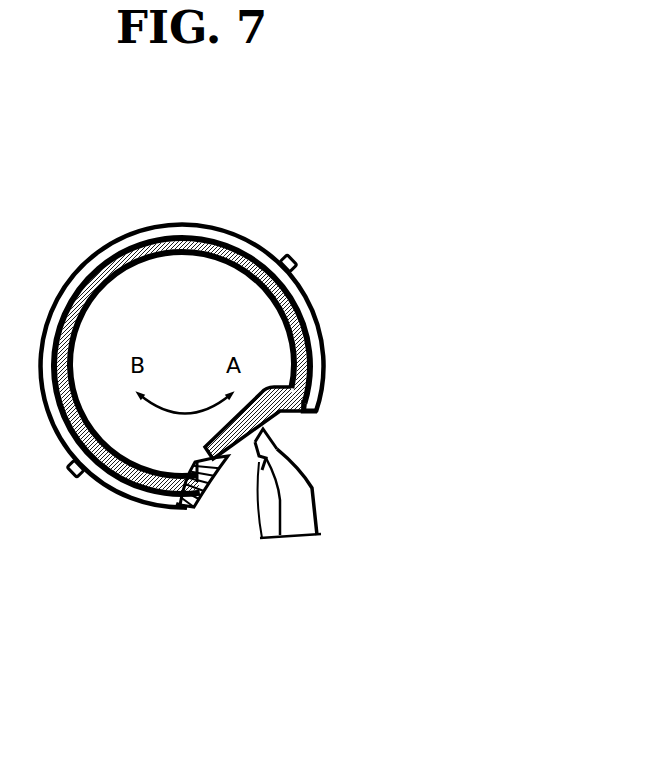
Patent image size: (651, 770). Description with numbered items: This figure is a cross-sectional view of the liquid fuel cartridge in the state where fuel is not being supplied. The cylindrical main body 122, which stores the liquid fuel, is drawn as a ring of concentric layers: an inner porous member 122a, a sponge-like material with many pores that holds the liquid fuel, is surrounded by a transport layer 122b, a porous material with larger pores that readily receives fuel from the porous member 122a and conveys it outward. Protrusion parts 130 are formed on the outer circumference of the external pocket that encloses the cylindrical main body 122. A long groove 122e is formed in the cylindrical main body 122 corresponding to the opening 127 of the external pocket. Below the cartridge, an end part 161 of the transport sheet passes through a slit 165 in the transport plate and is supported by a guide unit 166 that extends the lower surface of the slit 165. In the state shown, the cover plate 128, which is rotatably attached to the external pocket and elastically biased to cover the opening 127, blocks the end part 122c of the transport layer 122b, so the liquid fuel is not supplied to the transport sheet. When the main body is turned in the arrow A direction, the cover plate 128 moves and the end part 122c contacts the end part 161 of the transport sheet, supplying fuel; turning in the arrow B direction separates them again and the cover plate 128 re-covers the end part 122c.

The cylindrical main body 122 is at (426, 288).
The porous member 122a is at (267, 345).
The transport layer 122b is at (316, 358).
The end part of the transport layer 122c is at (162, 494).
The long groove 122e is at (290, 416).
The opening of the external pocket 127 is at (326, 411).
The cover plate 128 is at (206, 508).
The protrusion parts 130 is at (298, 257).
The end part of the transport sheet 161 is at (261, 541).
The slit 165 is at (295, 492).
The guide unit 166 is at (290, 453).